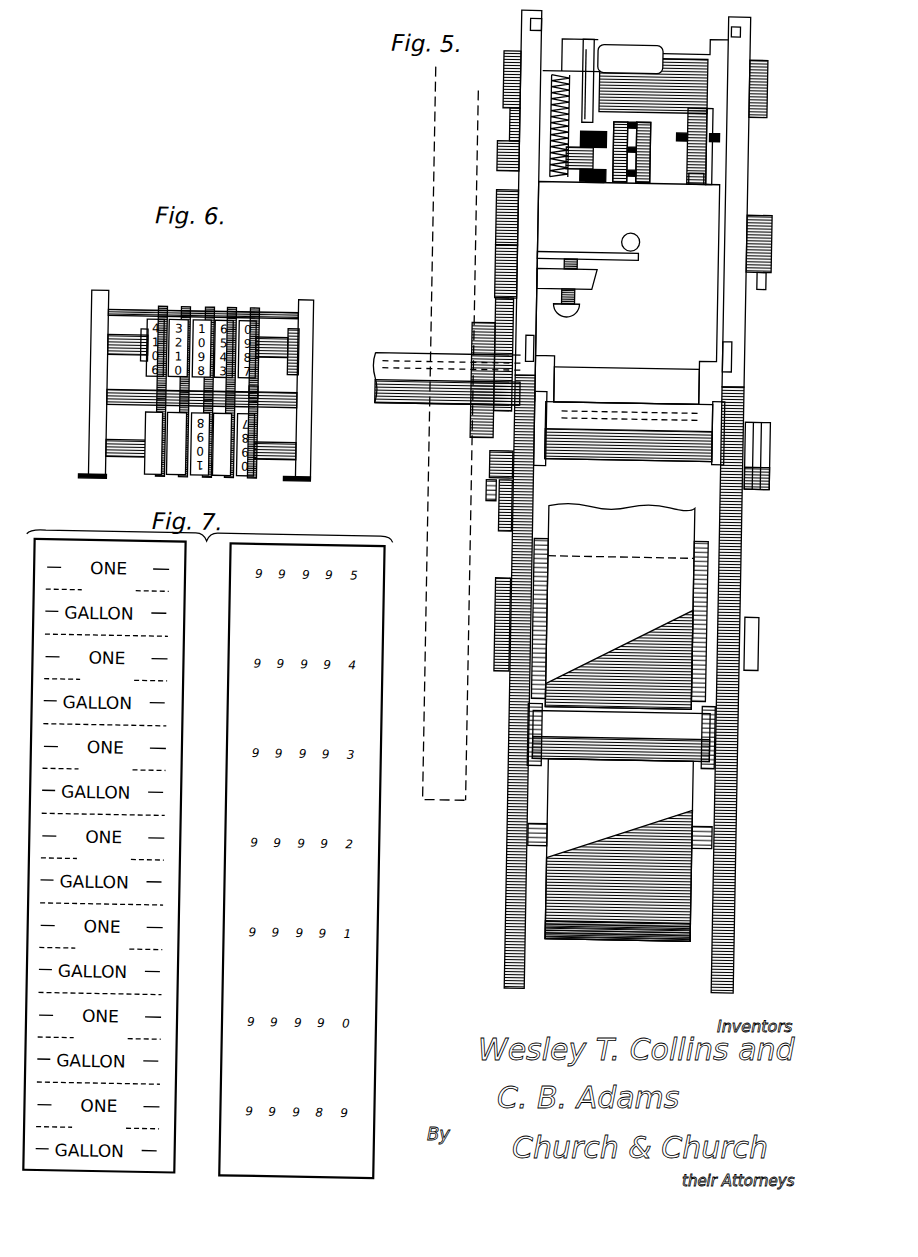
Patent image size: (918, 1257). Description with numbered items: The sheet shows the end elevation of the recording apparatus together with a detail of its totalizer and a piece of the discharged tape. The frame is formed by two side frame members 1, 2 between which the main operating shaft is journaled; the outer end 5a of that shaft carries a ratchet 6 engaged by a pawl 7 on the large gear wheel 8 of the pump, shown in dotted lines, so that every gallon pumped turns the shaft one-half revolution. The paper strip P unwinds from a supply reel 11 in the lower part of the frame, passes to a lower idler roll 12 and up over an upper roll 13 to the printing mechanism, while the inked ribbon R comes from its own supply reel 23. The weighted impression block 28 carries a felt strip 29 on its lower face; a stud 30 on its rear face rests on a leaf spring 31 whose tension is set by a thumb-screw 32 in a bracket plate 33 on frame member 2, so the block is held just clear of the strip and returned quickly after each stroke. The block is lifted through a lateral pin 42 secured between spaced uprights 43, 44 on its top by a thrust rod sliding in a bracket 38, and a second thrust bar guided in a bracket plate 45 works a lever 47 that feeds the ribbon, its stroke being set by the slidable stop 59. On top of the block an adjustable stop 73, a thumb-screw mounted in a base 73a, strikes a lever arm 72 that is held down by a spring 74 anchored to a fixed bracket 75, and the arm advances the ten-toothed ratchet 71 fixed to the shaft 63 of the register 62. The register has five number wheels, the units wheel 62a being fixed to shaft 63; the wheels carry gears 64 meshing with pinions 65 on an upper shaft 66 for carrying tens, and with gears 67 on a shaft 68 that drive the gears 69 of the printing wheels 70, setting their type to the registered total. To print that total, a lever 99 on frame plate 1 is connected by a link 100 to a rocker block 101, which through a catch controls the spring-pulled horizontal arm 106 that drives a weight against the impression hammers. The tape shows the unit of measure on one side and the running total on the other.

In FIG. 5, the side frame member 1 is at (727, 892).
In FIG. 6, the side frame member 1 is at (90, 466).
In FIG. 5, the side frame member 2 is at (505, 913).
In FIG. 6, the side frame member 2 is at (306, 472).
In FIG. 5, the outer end of shaft 5a is at (382, 352).
In FIG. 5, the ratchet 6 is at (472, 327).
In FIG. 5, the pawl 7 is at (468, 258).
In FIG. 5, the gear wheel 8 is at (427, 204).
In FIG. 5, the supply reel 11 is at (590, 942).
In FIG. 5, the lower idler roll 12 is at (621, 735).
In FIG. 5, the upper roll 13 is at (595, 412).
In FIG. 5, the ribbon supply reel 23 is at (598, 555).
In FIG. 5, the impression block 28 is at (622, 292).
In FIG. 5, the felt strip 29 is at (636, 386).
In FIG. 5, the stud 30 is at (634, 238).
In FIG. 5, the leaf spring 31 is at (625, 259).
In FIG. 5, the thumb-screw 32 is at (577, 312).
In FIG. 5, the bracket plate 33 is at (592, 284).
In FIG. 5, the bracket 38 is at (492, 256).
In FIG. 5, the lateral pin 42 is at (644, 131).
In FIG. 5, the upright 43 is at (641, 149).
In FIG. 5, the upright 44 is at (641, 162).
In FIG. 5, the bracket plate 45 is at (490, 478).
In FIG. 5, the lever 47 is at (496, 524).
In FIG. 5, the stop 59 is at (496, 612).
In FIG. 5, the lever arm 72 is at (583, 105).
In FIG. 5, the adjustable stop 73 is at (548, 137).
In FIG. 5, the base 73a is at (588, 183).
In FIG. 5, the spring 74 is at (546, 104).
In FIG. 5, the bracket 75 is at (490, 229).
In FIG. 5, the lever 99 is at (700, 160).
In FIG. 5, the link 100 is at (702, 176).
In FIG. 5, the rocker block 101 is at (767, 262).
In FIG. 5, the horizontal arm 106 is at (770, 445).
In FIG. 6, the register 62 is at (150, 477).
In FIG. 6, the units number wheel 62a is at (232, 310).
In FIG. 6, the shaft 63 is at (113, 343).
In FIG. 6, the gears 64 is at (259, 327).
In FIG. 6, the pinions 65 is at (164, 318).
In FIG. 6, the shaft 66 is at (258, 315).
In FIG. 6, the gears 67 is at (251, 392).
In FIG. 6, the shaft 68 is at (113, 393).
In FIG. 6, the gears 69 is at (217, 477).
In FIG. 6, the printing wheels 70 is at (169, 477).
In FIG. 6, the ratchet 71 is at (300, 345).